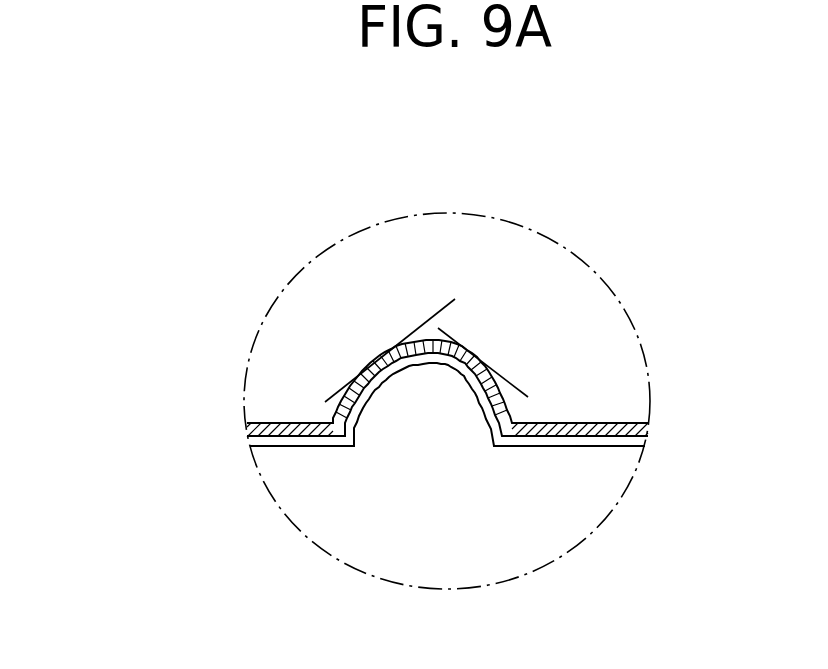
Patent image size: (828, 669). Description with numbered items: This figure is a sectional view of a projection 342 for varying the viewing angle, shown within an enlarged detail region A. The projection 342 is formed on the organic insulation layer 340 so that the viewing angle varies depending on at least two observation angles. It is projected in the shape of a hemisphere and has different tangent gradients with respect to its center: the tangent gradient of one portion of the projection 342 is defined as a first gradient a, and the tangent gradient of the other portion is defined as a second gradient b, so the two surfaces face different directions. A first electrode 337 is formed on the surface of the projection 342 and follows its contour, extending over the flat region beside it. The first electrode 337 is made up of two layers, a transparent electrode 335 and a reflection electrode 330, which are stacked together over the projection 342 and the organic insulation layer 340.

The first electrode 337 is at (344, 456).
The reflection electrode 330 is at (247, 426).
The transparent electrode 335 is at (250, 443).
The organic insulation layer 340 is at (273, 487).
The projection 342 is at (467, 402).
The enlarged detail region A is at (633, 478).
The first gradient a is at (397, 337).
The second gradient b is at (495, 373).